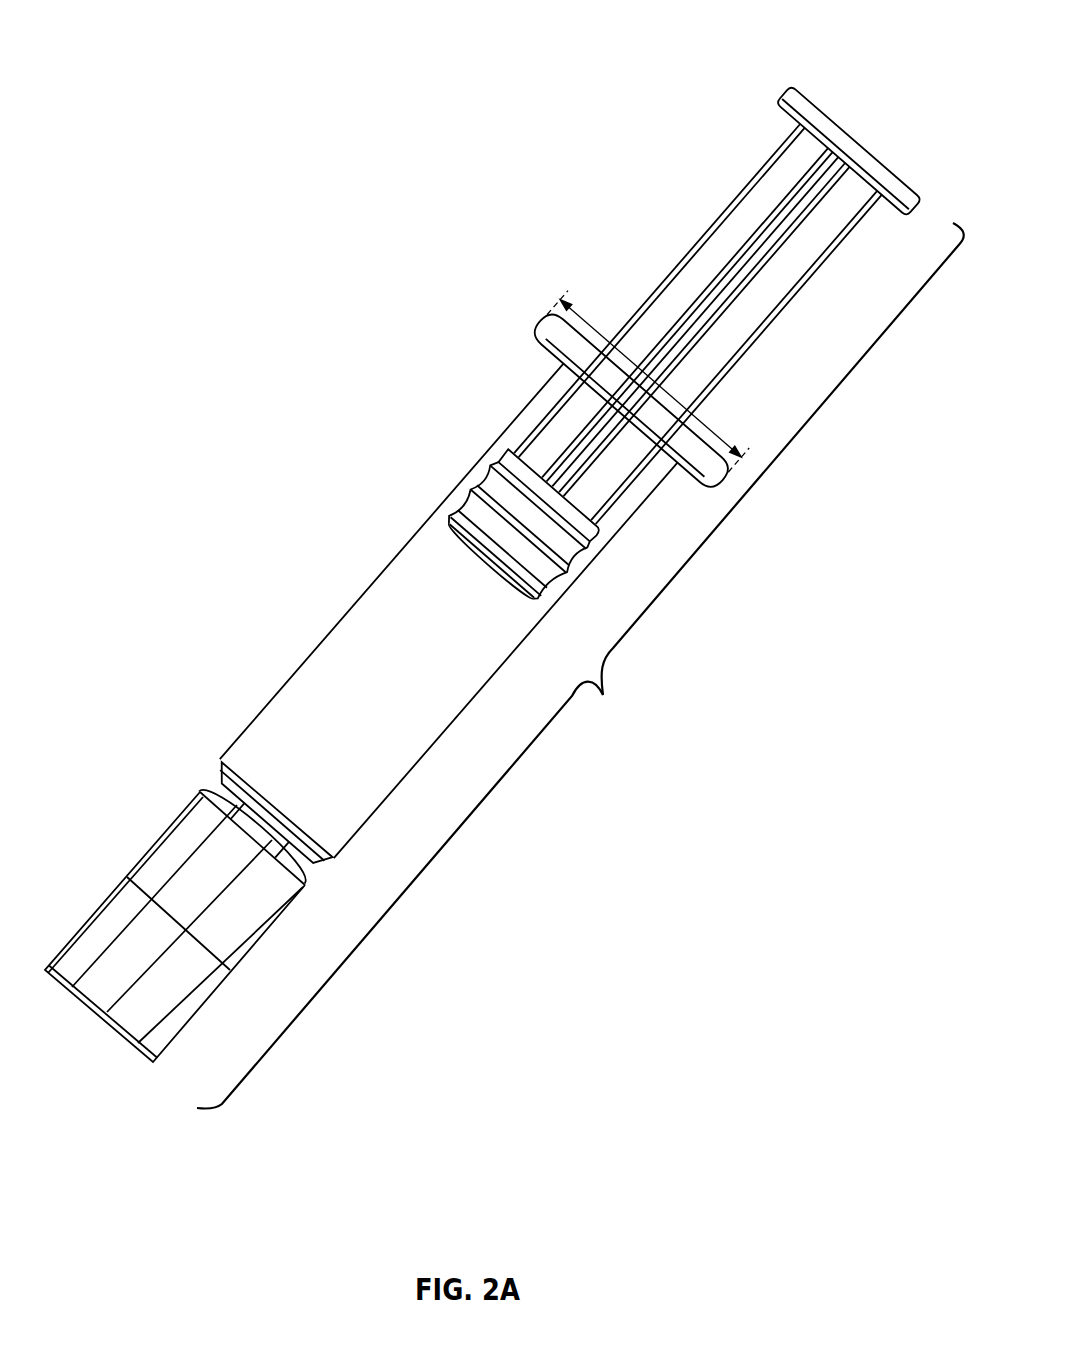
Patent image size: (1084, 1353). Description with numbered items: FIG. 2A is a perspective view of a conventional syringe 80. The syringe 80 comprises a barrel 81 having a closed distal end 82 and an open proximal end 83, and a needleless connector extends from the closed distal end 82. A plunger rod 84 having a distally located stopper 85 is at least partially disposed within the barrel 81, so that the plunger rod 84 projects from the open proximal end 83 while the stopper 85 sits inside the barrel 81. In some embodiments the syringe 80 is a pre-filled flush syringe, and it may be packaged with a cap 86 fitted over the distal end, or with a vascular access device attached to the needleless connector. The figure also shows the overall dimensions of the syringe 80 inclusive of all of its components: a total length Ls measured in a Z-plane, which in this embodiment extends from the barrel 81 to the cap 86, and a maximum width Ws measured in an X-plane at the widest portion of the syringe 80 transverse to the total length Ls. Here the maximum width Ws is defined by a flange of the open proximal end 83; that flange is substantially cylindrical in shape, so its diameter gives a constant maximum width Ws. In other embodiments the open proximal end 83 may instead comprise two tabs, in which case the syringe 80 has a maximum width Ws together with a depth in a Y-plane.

The syringe 80 is at (212, 47).
The barrel 81 is at (360, 595).
The closed distal end 82 is at (227, 757).
The open proximal end 83 is at (541, 351).
The plunger rod 84 is at (742, 192).
The stopper 85 is at (443, 517).
The cap 86 is at (140, 855).
The maximum width Ws is at (603, 334).
The total length Ls is at (580, 666).